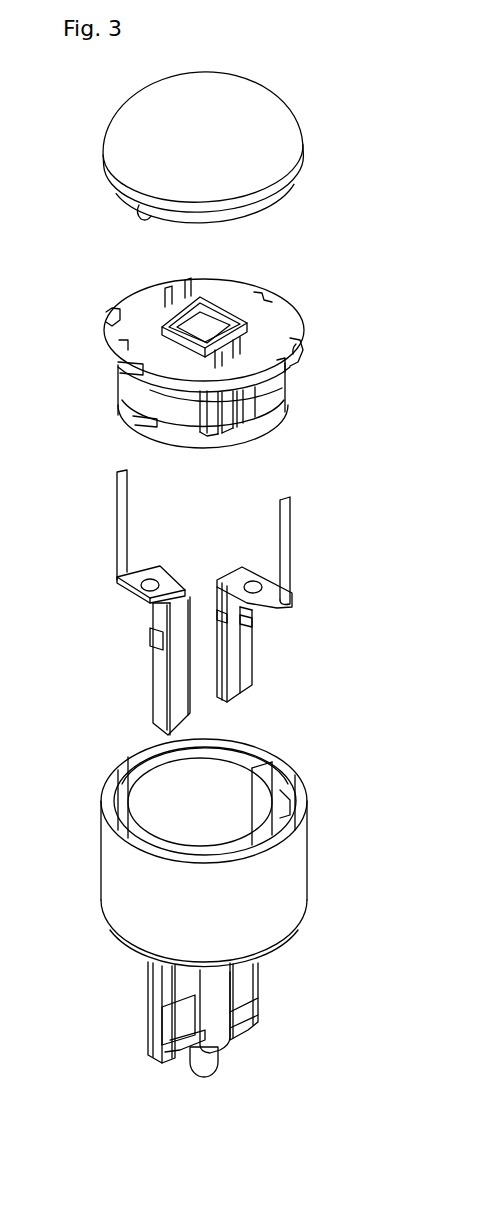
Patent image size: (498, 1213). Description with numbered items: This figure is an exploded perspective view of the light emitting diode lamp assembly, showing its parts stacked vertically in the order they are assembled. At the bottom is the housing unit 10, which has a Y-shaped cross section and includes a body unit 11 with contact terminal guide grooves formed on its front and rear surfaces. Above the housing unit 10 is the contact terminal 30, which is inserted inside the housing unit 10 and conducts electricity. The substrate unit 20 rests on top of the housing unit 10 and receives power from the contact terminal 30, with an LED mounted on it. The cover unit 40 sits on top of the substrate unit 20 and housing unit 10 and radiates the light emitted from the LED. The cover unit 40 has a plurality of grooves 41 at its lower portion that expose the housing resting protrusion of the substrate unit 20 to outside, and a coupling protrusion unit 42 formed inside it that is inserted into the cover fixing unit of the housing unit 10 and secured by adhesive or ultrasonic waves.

The housing unit 10 is at (325, 848).
The body unit 11 is at (268, 985).
The substrate unit 20 is at (308, 287).
The contact terminal 30 is at (300, 568).
The cover unit 40 is at (265, 123).
The grooves 41 is at (306, 172).
The coupling protrusion unit 42 is at (145, 212).